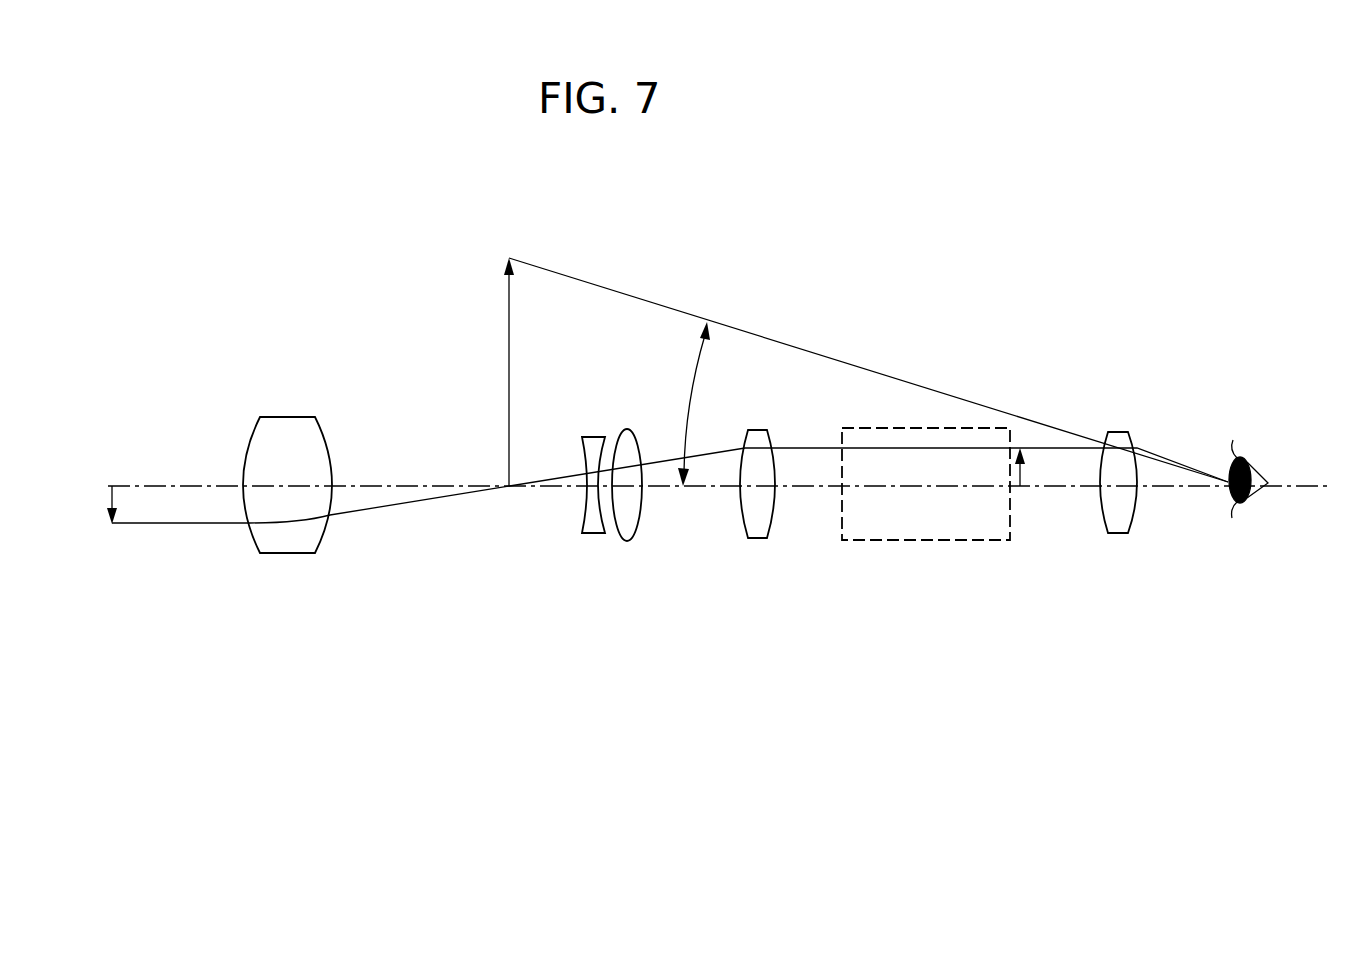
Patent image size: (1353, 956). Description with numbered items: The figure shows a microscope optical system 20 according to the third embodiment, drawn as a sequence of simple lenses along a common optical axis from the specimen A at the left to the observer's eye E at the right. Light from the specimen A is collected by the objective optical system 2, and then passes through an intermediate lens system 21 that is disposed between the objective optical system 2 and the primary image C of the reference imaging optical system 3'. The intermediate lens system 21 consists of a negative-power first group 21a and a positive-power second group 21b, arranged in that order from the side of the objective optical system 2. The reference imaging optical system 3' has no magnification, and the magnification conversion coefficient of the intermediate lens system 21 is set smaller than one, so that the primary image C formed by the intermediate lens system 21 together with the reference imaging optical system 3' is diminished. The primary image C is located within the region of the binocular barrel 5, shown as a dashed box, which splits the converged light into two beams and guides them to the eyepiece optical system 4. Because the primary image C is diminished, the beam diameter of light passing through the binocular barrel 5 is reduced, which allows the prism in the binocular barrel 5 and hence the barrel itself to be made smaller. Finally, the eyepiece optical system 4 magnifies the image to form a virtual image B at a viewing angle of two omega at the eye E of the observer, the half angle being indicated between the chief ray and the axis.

The objective optical system 2 is at (329, 441).
The microscope optical system 20 is at (839, 478).
The intermediate lens system 21 is at (603, 541).
The negative-power first group 21a is at (594, 535).
The positive-power second group 21b is at (636, 516).
The reference imaging optical system 3' is at (757, 519).
The binocular barrel 5 is at (930, 541).
The eyepiece optical system 4 is at (1118, 535).
The specimen A is at (110, 492).
The virtual image B is at (511, 375).
The primary image C is at (1022, 472).
The eye E is at (1262, 466).